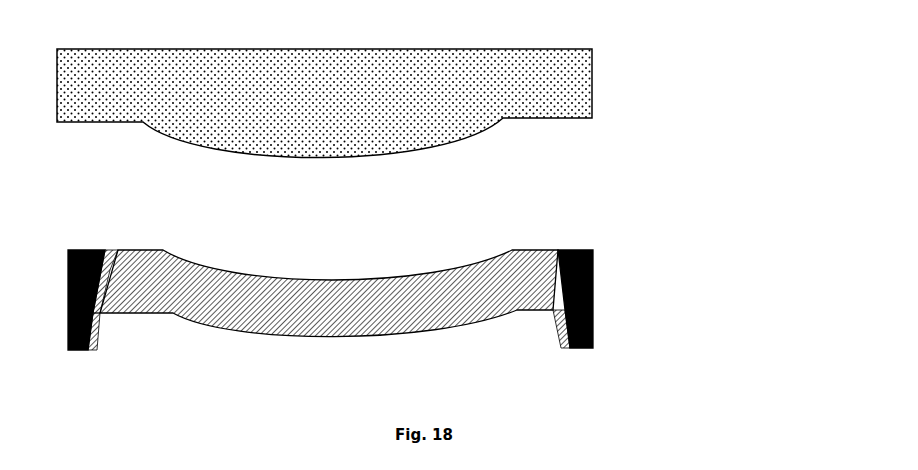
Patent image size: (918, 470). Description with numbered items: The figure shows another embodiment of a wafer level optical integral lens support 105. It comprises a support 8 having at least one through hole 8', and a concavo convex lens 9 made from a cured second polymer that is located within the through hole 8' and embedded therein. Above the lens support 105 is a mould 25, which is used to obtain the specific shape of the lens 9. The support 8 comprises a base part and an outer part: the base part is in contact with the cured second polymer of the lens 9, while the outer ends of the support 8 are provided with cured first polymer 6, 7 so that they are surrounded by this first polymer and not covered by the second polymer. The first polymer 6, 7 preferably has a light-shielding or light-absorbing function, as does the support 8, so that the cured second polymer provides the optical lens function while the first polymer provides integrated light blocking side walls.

The mould 25 is at (557, 85).
The wafer level optical integral lens support 105 is at (425, 295).
The concavo convex lens 9 is at (369, 314).
The support 8 is at (343, 271).
The through hole 8' is at (135, 259).
The cured first polymer 7 is at (102, 314).
The cured first polymer 6 is at (565, 344).